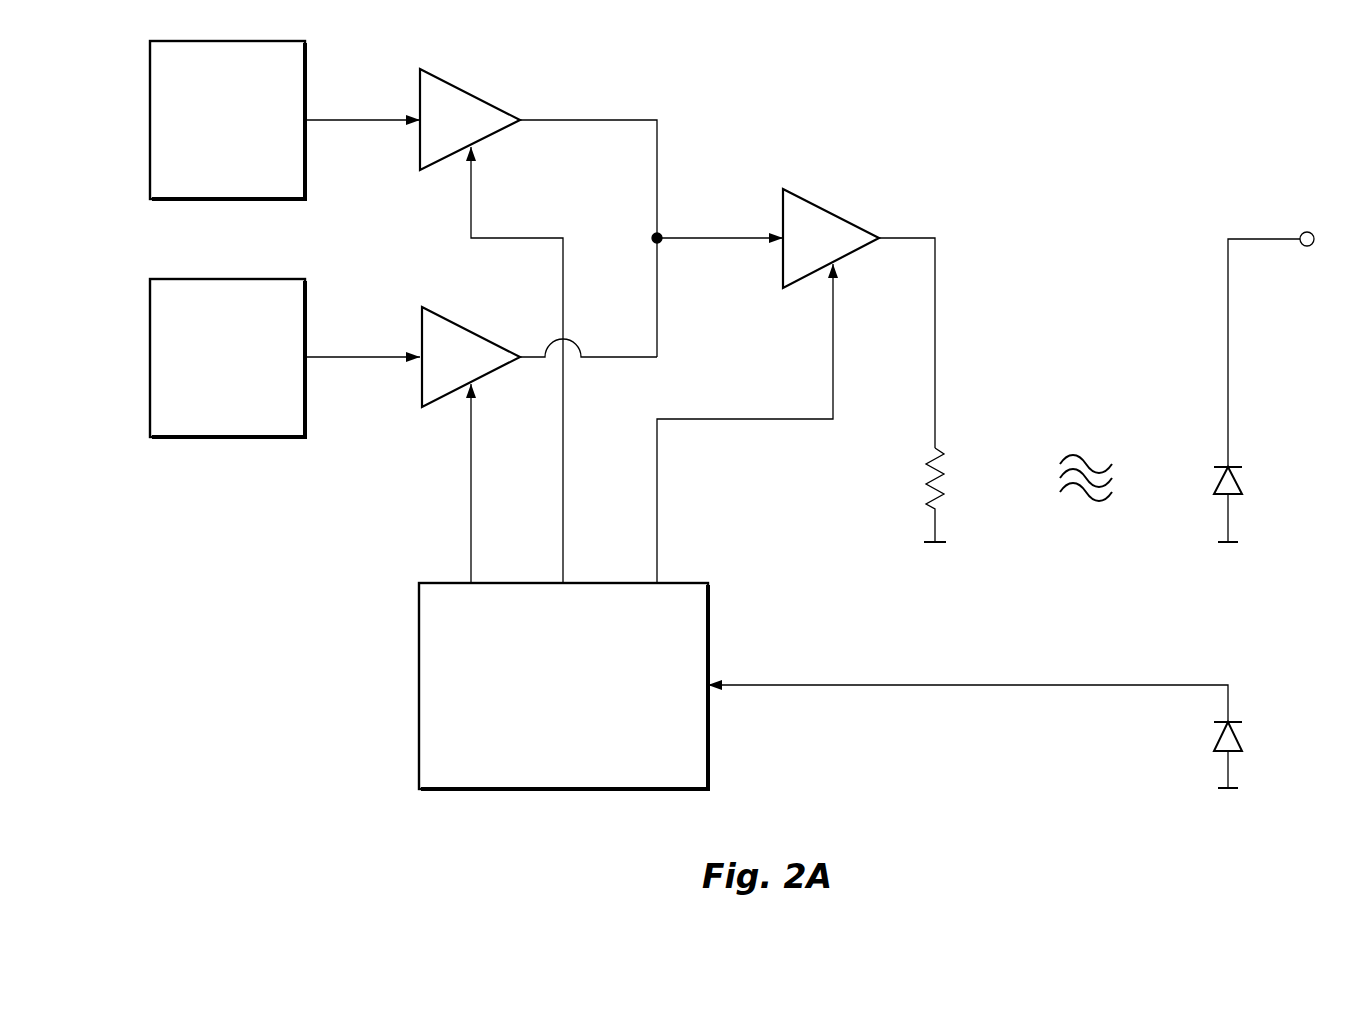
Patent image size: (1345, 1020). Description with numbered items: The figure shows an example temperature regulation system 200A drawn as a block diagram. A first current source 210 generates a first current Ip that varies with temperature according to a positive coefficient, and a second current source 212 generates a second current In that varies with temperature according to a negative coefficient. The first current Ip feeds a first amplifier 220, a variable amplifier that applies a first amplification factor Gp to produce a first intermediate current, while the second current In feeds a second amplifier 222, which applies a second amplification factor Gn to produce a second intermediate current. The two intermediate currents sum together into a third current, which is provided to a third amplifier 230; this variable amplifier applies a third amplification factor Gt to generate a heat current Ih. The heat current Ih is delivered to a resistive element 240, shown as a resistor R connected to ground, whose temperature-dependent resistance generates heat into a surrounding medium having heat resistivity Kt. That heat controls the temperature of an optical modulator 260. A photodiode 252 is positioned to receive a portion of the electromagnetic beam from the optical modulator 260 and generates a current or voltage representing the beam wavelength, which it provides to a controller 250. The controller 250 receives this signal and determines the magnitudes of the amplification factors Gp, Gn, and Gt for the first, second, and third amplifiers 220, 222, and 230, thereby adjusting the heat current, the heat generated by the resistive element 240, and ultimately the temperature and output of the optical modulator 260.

The temperature regulation system 200A is at (1236, 120).
The first current source 210 is at (211, 158).
The second current source 212 is at (211, 396).
The first amplifier 220 is at (437, 133).
The second amplifier 222 is at (437, 369).
The third amplifier 230 is at (799, 250).
The resistive element 240 is at (925, 481).
The controller 250 is at (544, 712).
The photodiode 252 is at (1240, 740).
The optical modulator 260 is at (1240, 481).